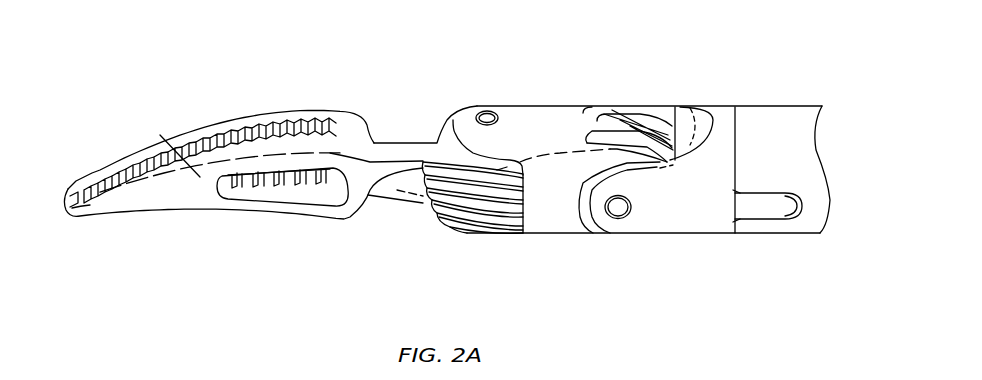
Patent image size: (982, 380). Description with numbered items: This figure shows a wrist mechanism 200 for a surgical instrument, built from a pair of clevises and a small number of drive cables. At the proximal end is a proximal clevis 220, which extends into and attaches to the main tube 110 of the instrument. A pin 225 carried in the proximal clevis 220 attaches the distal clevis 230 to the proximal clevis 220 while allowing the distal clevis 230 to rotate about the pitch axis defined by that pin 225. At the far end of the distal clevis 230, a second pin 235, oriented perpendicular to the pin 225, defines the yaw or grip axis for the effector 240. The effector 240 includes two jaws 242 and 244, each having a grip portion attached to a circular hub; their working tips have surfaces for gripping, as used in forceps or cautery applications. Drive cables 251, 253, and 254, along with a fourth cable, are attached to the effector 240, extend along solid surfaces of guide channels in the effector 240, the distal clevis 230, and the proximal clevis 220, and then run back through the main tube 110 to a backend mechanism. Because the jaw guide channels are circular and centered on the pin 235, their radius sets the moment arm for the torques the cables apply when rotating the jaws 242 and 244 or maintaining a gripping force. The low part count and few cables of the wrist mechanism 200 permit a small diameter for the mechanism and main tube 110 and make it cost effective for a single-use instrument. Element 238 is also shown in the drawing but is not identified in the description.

The wrist mechanism 200 is at (352, 50).
The effector 240 is at (160, 135).
The jaw 242 is at (225, 122).
The jaw 244 is at (235, 213).
The pin 235 is at (485, 118).
The distal clevis 230 is at (512, 105).
The cable 253 is at (610, 133).
The cable 254 is at (660, 117).
The main tube 110 is at (768, 105).
The proximal clevis 220 is at (717, 237).
The pin 225 is at (618, 219).
The spring 238 is at (432, 190).
The cable 251 is at (500, 213).